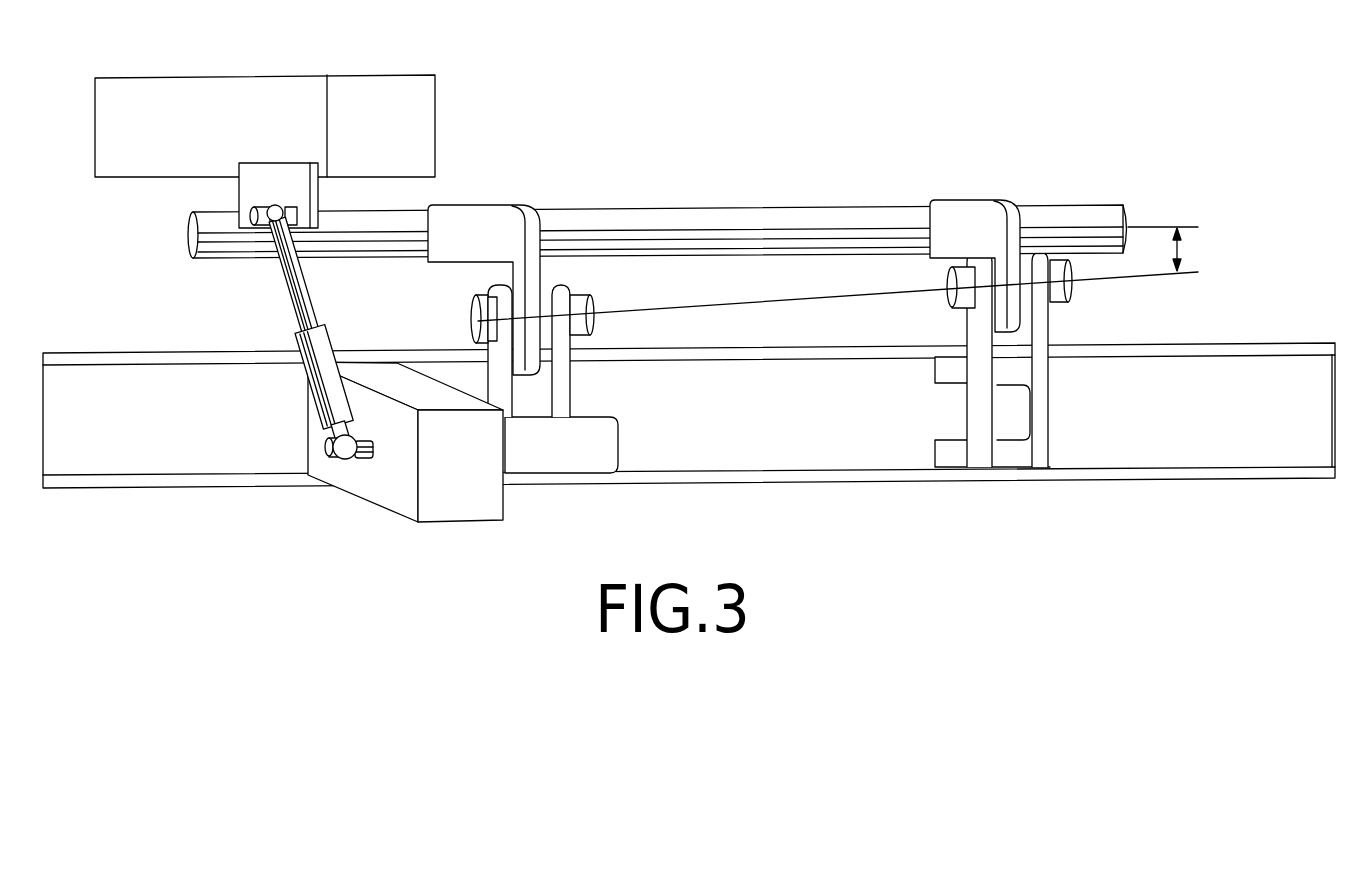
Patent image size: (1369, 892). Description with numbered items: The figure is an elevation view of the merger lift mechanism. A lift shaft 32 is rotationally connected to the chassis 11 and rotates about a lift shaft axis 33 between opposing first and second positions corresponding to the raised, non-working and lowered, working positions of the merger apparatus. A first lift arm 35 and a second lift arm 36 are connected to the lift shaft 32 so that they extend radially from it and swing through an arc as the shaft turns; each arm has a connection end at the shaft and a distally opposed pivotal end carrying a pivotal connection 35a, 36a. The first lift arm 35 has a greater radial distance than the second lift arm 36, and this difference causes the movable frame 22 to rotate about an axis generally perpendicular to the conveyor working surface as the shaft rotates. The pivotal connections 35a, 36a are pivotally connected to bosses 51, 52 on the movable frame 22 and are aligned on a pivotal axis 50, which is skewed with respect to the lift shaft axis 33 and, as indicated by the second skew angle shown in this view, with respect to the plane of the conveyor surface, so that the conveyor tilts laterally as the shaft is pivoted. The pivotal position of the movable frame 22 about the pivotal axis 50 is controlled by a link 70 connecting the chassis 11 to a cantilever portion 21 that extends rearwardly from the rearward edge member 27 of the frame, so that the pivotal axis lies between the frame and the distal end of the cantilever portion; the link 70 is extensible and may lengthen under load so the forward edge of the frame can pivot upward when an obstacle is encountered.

The chassis 11 is at (405, 117).
The cantilever portion 21 is at (503, 522).
The movable frame 22 is at (1300, 305).
The rearward edge member 27 is at (1143, 450).
The lift shaft 32 is at (1055, 212).
The lift shaft axis 33 is at (1153, 225).
The first lift arm 35 is at (507, 252).
The first pivotal connection 35a is at (522, 308).
The second lift arm 36 is at (960, 208).
The second pivotal connection 36a is at (1017, 320).
The pivotal axis 50 is at (864, 298).
The boss 51 is at (563, 372).
The boss 52 is at (1042, 312).
The link 70 is at (297, 305).